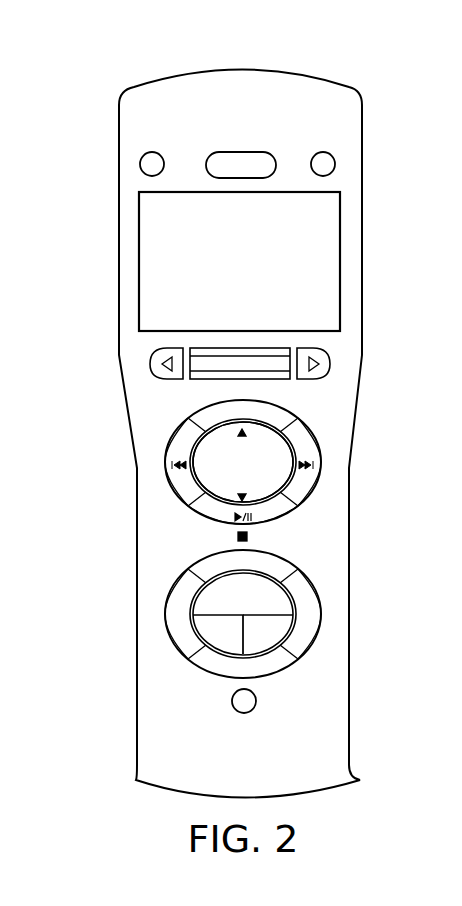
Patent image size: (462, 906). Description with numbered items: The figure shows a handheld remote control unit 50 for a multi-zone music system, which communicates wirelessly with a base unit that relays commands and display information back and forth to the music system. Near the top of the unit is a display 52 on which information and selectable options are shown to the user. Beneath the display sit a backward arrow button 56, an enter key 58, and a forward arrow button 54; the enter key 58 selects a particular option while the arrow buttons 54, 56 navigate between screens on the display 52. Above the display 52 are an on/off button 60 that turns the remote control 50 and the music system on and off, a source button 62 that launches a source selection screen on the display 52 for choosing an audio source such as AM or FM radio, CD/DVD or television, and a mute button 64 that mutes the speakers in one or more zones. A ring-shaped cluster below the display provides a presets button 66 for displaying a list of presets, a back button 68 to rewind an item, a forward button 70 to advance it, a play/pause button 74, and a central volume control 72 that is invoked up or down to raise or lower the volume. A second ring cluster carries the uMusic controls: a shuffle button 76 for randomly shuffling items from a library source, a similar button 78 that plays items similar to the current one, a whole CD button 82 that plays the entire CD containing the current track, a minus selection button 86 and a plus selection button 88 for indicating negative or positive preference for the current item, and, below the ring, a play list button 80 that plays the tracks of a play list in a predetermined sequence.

The remote control unit 50 is at (395, 102).
The display 52 is at (332, 252).
The forward arrow button 54 is at (329, 356).
The backward arrow button 56 is at (152, 362).
The enter key 58 is at (229, 355).
The on/off button 60 is at (162, 157).
The source button 62 is at (228, 151).
The mute button 64 is at (330, 155).
The presets button 66 is at (210, 417).
The back button 68 is at (170, 455).
The forward button 70 is at (305, 443).
The volume control 72 is at (275, 477).
The play/pause button 74 is at (210, 512).
The shuffle button 76 is at (280, 566).
The similar button 78 is at (316, 612).
The play list button 80 is at (275, 667).
The whole CD button 82 is at (176, 602).
The minus selection button 86 is at (210, 628).
The plus selection button 88 is at (283, 632).